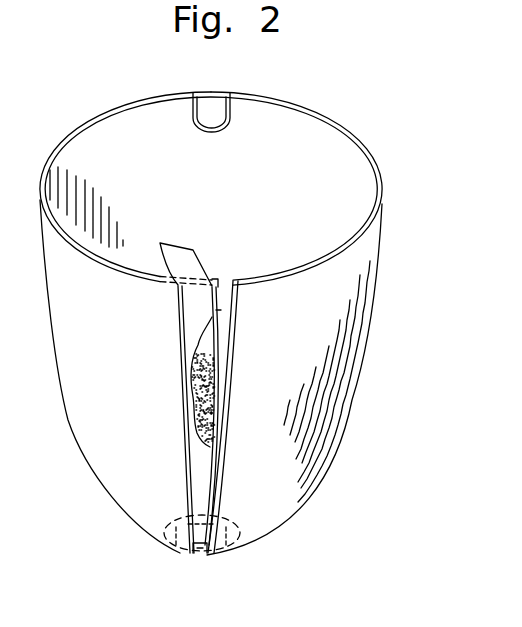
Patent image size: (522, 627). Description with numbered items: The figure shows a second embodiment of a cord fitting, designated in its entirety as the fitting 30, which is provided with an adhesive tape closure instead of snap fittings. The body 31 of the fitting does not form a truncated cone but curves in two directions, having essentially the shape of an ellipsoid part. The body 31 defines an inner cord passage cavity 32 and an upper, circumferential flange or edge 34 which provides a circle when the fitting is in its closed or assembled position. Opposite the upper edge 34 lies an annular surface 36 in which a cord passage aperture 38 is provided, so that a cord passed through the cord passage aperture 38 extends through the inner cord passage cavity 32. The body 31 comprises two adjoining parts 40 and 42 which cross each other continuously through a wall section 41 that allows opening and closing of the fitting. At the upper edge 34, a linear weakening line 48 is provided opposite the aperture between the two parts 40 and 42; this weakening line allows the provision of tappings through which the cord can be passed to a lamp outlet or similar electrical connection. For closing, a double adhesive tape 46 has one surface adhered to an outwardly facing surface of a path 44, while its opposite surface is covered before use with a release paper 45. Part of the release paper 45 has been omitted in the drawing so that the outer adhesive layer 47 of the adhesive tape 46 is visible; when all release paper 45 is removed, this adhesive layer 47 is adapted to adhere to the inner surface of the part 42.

The fitting 30 is at (348, 119).
The body of the fitting 31 is at (333, 338).
The inner cord passage cavity 32 is at (331, 191).
The upper circumferential edge 34 is at (110, 110).
The annular surface 36 is at (168, 553).
The cord passage aperture 38 is at (182, 557).
The first adjoining part 40 is at (174, 389).
The wall section 41 is at (287, 132).
The second adjoining part 42 is at (240, 401).
The path 44 is at (225, 286).
The release paper 45 is at (193, 465).
The double adhesive tape 46 is at (178, 258).
The outer adhesive layer 47 is at (216, 417).
The linear weakening line 48 is at (208, 106).